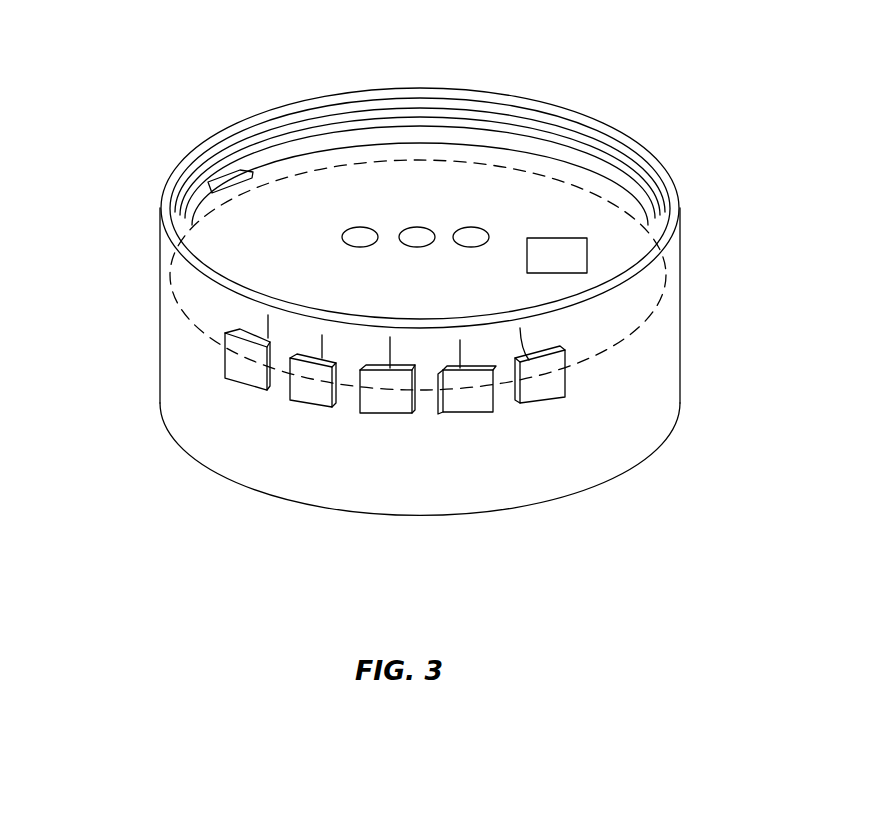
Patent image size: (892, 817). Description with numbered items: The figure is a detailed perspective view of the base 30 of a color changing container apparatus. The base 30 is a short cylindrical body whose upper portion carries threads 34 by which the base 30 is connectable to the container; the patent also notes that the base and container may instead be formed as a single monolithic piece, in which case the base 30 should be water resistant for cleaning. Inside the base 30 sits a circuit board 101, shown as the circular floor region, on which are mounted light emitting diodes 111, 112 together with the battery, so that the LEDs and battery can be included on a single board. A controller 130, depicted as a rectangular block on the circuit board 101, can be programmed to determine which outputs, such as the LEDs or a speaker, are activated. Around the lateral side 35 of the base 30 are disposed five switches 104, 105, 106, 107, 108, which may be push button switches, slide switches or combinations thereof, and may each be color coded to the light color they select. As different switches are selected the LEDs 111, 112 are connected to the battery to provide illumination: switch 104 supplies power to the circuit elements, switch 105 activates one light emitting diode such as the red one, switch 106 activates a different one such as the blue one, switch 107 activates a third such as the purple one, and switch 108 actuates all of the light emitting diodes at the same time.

The base 30 is at (653, 353).
The threads 34 is at (207, 175).
The lateral side 35 is at (653, 393).
The circuit board 101 is at (302, 208).
The switch 104 is at (247, 362).
The switch 105 is at (460, 392).
The switch 106 is at (307, 380).
The switch 107 is at (542, 383).
The switch 108 is at (388, 397).
The light emitting diode 111 is at (463, 227).
The light emitting diode 112 is at (408, 227).
The controller 130 is at (562, 238).